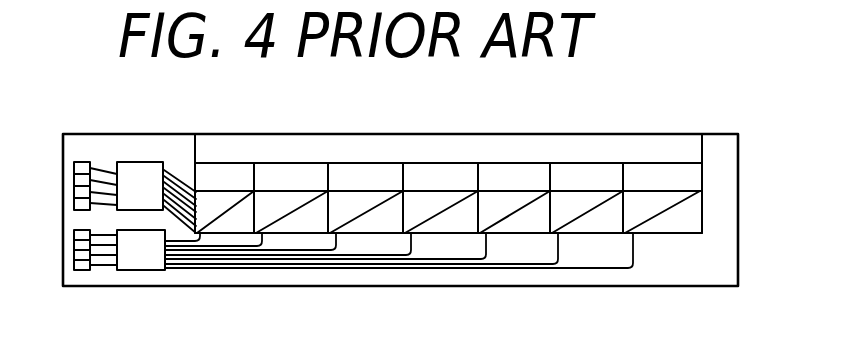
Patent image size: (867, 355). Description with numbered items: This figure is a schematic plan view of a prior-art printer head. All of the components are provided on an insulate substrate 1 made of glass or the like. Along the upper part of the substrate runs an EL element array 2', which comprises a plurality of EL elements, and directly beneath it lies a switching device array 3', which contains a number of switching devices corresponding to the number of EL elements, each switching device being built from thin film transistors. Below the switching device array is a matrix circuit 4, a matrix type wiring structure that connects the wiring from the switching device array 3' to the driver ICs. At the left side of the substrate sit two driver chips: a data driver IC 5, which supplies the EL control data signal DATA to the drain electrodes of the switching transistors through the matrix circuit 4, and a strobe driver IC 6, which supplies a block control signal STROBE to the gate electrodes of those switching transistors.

The insulate substrate 1 is at (85, 143).
The EL element array 2' is at (454, 161).
The switching device array 3' is at (493, 168).
The matrix circuit 4 is at (688, 215).
The data driver IC 5 is at (140, 170).
The strobe driver IC 6 is at (138, 263).